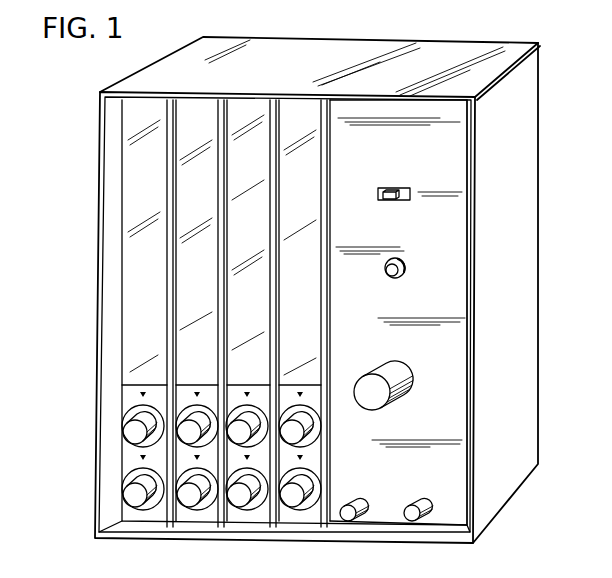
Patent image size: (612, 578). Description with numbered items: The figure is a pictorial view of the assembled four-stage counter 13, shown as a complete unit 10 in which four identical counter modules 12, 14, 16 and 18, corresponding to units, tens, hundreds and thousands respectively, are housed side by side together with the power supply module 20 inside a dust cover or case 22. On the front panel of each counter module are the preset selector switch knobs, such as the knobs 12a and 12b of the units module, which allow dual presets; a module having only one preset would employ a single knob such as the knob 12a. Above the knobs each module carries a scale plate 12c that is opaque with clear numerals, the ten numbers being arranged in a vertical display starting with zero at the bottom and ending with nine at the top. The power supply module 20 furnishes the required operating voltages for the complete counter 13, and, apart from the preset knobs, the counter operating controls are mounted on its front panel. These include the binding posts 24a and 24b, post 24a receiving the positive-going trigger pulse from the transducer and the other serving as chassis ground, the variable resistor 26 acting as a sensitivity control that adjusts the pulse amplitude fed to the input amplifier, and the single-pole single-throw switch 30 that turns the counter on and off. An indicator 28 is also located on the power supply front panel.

The counting unit housing 10 is at (306, 572).
The counter module 12 is at (324, 294).
The preset selector switch knob 12a is at (314, 482).
The preset selector switch knob 12b is at (314, 443).
The scale plate 12c is at (313, 368).
The counter 13 is at (433, 70).
The counter module 14 is at (245, 117).
The counter module 16 is at (198, 114).
The counter module 18 is at (142, 114).
The power supply module 20 is at (437, 238).
The dust cover or case 22 is at (112, 259).
The binding post 24a is at (352, 505).
The binding post 24b is at (415, 505).
The variable resistor 26 is at (400, 380).
The indicator lamp 28 is at (394, 277).
The single-pole single-throw switch 30 is at (390, 201).